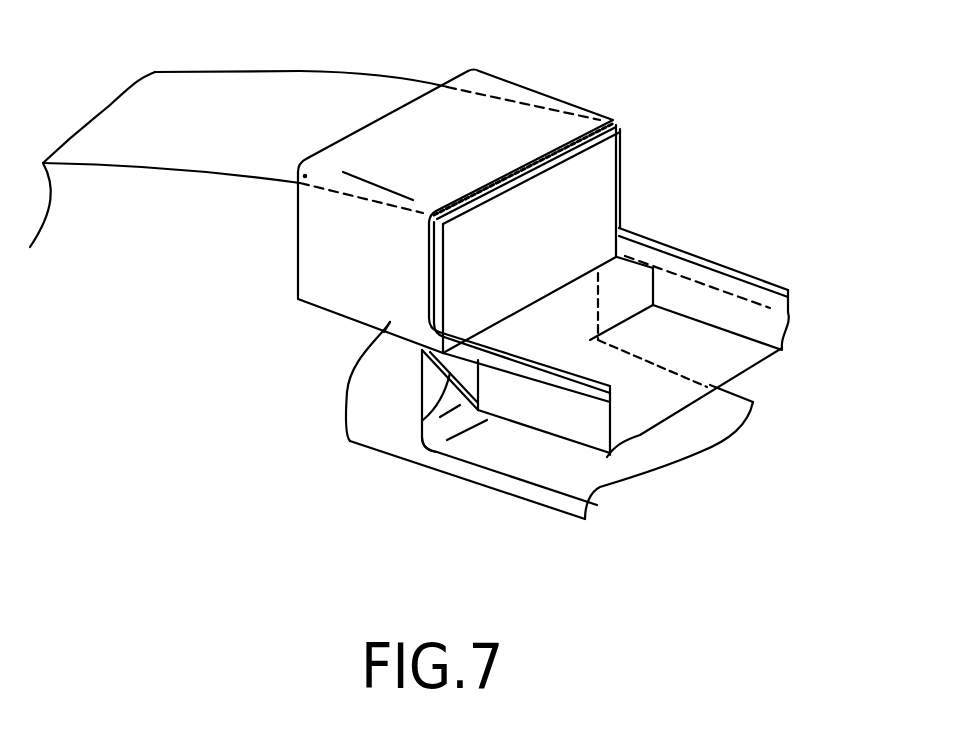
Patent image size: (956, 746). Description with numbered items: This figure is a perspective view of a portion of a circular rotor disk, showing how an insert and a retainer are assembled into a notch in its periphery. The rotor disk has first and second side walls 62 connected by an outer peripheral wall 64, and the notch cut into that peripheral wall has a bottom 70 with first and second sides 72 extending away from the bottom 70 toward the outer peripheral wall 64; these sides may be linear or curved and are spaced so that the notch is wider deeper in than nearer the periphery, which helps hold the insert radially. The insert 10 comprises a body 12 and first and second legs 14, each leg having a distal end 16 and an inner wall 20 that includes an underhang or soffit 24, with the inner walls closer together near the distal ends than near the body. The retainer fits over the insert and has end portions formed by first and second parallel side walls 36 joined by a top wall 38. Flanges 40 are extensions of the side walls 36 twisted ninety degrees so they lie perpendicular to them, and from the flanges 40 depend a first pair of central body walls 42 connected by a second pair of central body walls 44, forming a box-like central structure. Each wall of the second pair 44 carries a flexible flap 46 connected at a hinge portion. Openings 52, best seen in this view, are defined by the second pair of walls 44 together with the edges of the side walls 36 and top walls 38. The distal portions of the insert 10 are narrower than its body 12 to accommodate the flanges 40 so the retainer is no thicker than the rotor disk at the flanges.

The insert 10 is at (543, 440).
The body 12 is at (516, 476).
The legs 14 is at (315, 381).
The distal ends 16 is at (536, 138).
The inner wall 20 is at (578, 239).
The soffit 24 is at (584, 271).
The side walls 36 is at (327, 262).
The top wall 38 is at (455, 112).
The flanges 40 is at (616, 398).
The first pair of central body walls 42 is at (714, 405).
The second pair of central body walls 44 is at (648, 330).
The flexible flap 46 is at (374, 419).
The openings 52 is at (361, 289).
The side walls 62 is at (82, 205).
The outer peripheral wall 64 is at (321, 142).
The bottom 70 is at (425, 507).
The sides 72 is at (322, 354).